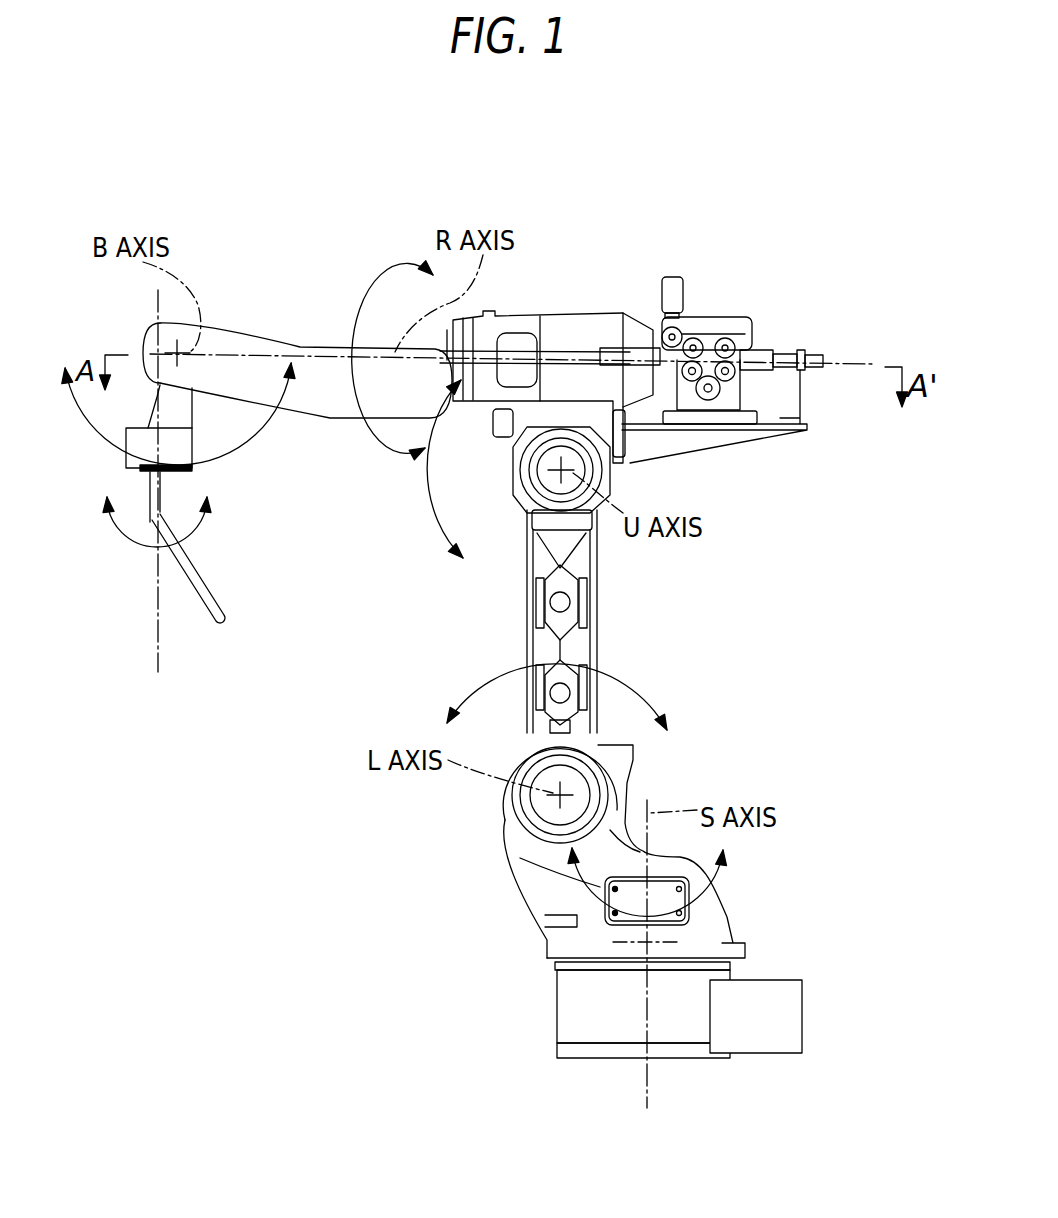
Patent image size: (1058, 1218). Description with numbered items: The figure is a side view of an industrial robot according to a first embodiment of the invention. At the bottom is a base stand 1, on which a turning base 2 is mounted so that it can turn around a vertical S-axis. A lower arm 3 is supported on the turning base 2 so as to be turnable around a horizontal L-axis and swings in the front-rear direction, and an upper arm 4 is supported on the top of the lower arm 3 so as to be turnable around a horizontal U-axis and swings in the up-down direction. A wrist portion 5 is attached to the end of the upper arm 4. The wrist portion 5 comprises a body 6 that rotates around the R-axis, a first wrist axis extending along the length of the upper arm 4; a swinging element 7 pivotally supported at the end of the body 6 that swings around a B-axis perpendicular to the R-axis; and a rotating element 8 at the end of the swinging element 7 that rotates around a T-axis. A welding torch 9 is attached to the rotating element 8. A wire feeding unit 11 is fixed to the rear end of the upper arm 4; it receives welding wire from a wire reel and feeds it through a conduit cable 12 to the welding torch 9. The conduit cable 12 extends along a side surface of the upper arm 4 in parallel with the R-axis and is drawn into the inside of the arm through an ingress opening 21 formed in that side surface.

The base stand 1 is at (572, 1003).
The turning base 2 is at (540, 887).
The lower arm 3 is at (597, 627).
The upper arm 4 is at (548, 332).
The wrist portion 5 is at (219, 322).
The body 6 is at (253, 345).
The swinging element 7 is at (178, 440).
The rotating element 8 is at (172, 477).
The welding torch 9 is at (193, 595).
The wire feeding unit 11 is at (698, 340).
The conduit cable 12 is at (580, 353).
The ingress opening 21 is at (517, 340).